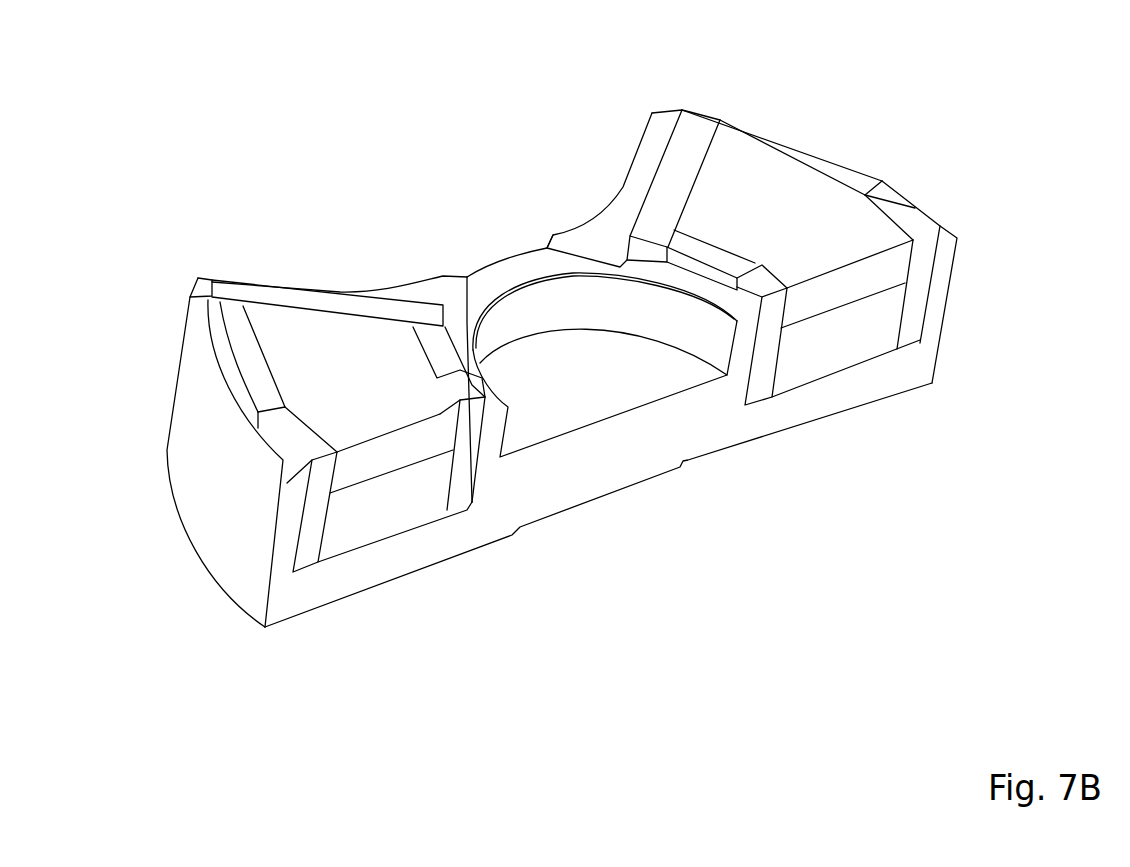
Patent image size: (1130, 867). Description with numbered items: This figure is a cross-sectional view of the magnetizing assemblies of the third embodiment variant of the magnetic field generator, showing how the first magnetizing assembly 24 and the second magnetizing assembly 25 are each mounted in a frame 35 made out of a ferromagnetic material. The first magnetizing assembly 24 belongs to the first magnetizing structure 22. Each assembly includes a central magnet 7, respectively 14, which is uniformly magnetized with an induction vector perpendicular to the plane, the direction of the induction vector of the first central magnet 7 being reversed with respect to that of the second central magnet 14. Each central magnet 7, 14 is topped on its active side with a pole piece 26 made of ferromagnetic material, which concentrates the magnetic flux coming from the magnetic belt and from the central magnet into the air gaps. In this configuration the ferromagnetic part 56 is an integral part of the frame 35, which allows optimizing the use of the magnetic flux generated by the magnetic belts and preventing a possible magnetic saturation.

The first magnetizing structure 22 is at (1003, 216).
The first magnetizing assembly 24 is at (288, 634).
The central magnet 7 is at (387, 522).
The pole piece 26 is at (739, 169).
The ferromagnetic part 56 is at (588, 412).
The second magnetizing assembly 25 is at (863, 419).
The central magnet 14 is at (867, 335).
The frame 35 is at (920, 362).